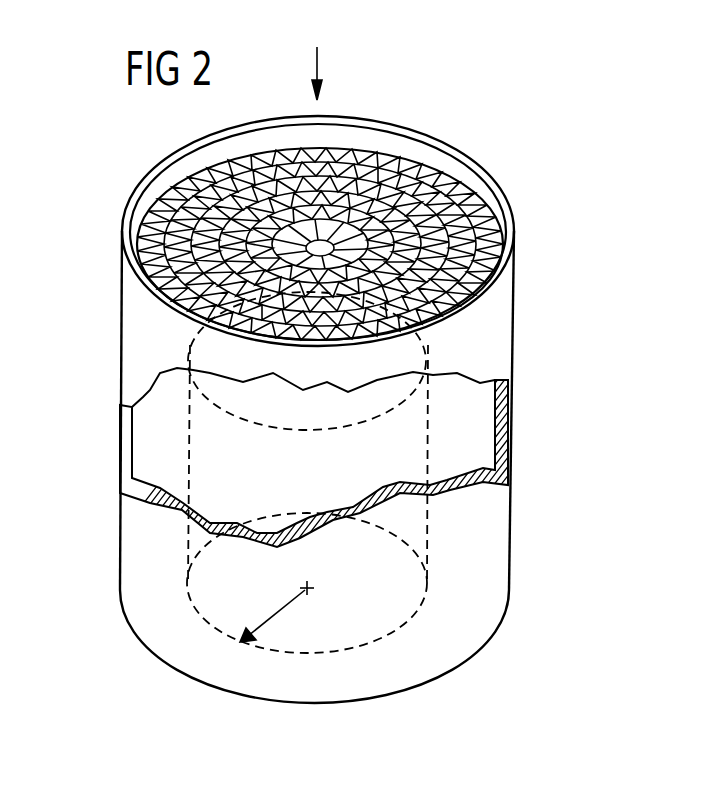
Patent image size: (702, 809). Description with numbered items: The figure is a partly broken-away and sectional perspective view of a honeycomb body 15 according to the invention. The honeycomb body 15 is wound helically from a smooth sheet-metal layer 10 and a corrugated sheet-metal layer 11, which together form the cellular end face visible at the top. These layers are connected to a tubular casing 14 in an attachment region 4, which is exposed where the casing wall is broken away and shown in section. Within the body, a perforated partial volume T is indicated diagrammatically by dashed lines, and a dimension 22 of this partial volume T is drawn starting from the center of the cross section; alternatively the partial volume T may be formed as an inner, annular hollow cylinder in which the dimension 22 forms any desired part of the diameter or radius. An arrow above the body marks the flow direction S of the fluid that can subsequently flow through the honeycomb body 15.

The attachment region 4 is at (210, 427).
The smooth sheet-metal layer 10 is at (385, 162).
The corrugated sheet-metal layer 11 is at (457, 183).
The tubular casing 14 is at (510, 420).
The honeycomb body 15 is at (140, 243).
The dimension 22 is at (280, 608).
The perforated partial volume T is at (410, 592).
The flow direction S is at (320, 62).